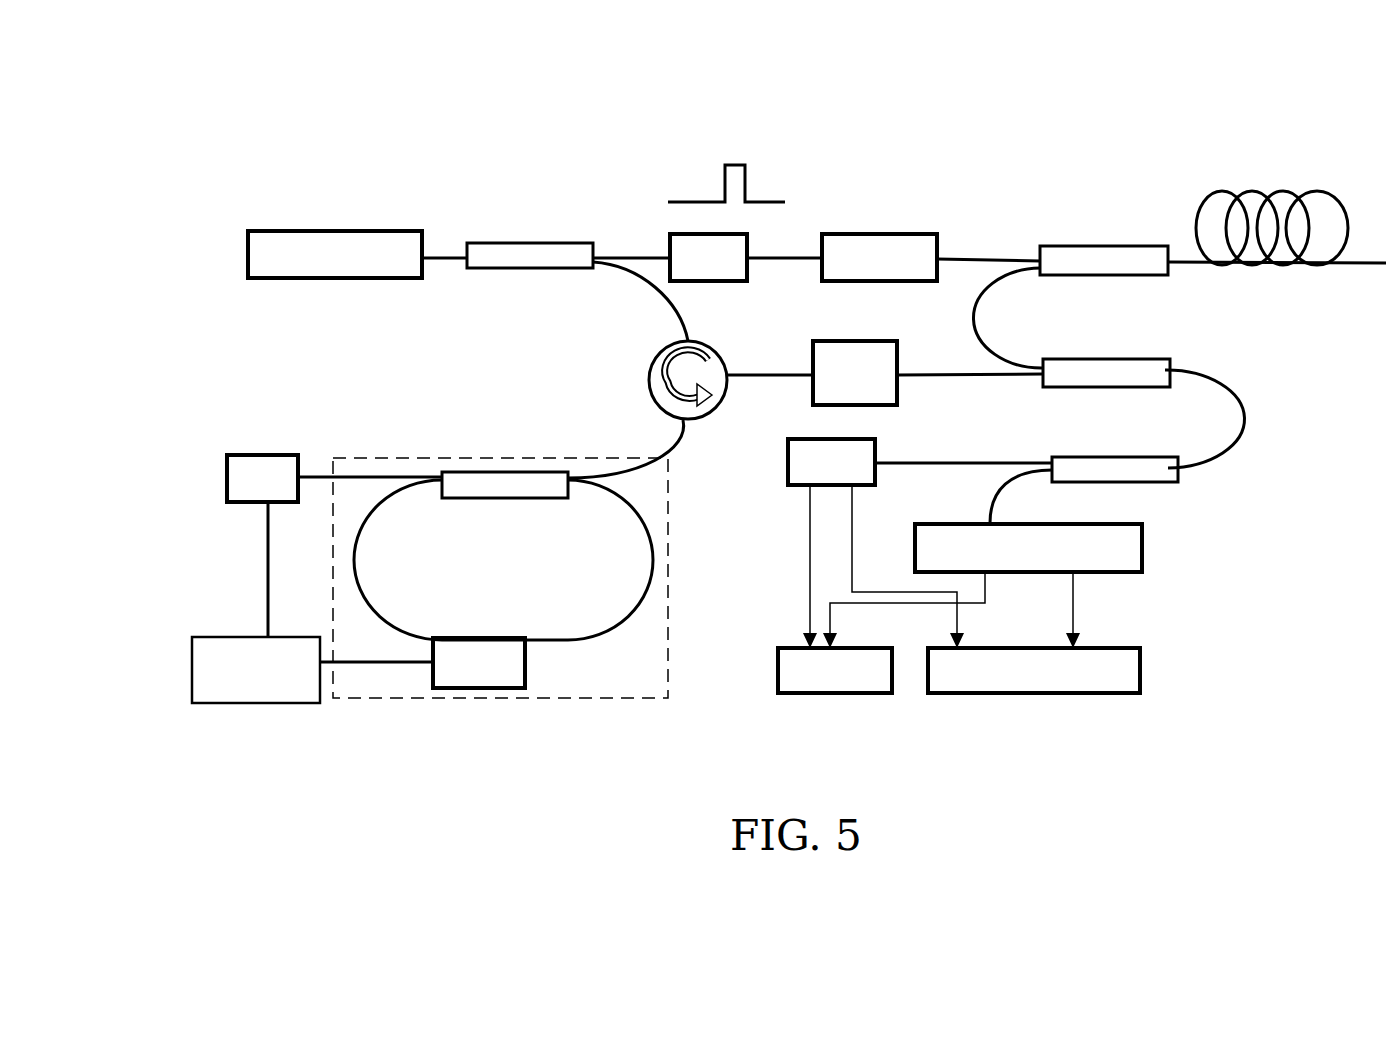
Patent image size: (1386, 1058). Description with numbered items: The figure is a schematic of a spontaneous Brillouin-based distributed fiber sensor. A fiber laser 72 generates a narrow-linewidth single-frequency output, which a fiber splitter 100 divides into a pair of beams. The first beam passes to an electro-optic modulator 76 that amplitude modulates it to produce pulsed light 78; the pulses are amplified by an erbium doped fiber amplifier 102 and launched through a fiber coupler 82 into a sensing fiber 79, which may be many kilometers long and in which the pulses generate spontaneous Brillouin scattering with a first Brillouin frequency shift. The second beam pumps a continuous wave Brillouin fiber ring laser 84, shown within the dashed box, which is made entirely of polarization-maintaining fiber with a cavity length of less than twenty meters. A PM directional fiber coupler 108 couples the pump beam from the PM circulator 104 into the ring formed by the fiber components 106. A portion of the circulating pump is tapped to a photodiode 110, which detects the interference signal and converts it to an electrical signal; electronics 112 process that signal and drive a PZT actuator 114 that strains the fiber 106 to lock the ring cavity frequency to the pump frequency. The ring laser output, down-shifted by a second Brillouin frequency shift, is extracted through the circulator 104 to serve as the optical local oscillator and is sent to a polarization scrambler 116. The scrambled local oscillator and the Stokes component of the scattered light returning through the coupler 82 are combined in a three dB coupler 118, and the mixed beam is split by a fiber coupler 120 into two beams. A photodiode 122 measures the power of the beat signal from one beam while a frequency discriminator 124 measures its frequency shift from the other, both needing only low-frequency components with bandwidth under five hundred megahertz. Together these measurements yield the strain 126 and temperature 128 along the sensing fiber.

The fiber laser 72 is at (303, 230).
The fiber splitter 100 is at (525, 241).
The electro-optic (EO) modulator 76 is at (690, 240).
The pulsed light 78 is at (720, 172).
The erbium doped fiber amplifier (EDFA) 102 is at (892, 233).
The fiber coupler 82 is at (1103, 245).
The sensing fiber 79 is at (1257, 188).
The PM circulator 104 is at (650, 370).
The polarization scrambler 116 is at (837, 341).
The 3 dB coupler 118 is at (1115, 358).
The fiber coupler 120 is at (1117, 457).
The photodiode 122 is at (788, 463).
The frequency discriminator 124 is at (1142, 542).
The strain 126 is at (778, 670).
The temperature 128 is at (1140, 665).
The Brillouin fiber ring laser 84 is at (226, 406).
The photodiode 110 is at (227, 473).
The PM directional fiber coupler 108 is at (497, 472).
The fiber components 106 is at (622, 503).
The electronics 112 is at (192, 668).
The PZT actuator 114 is at (475, 688).